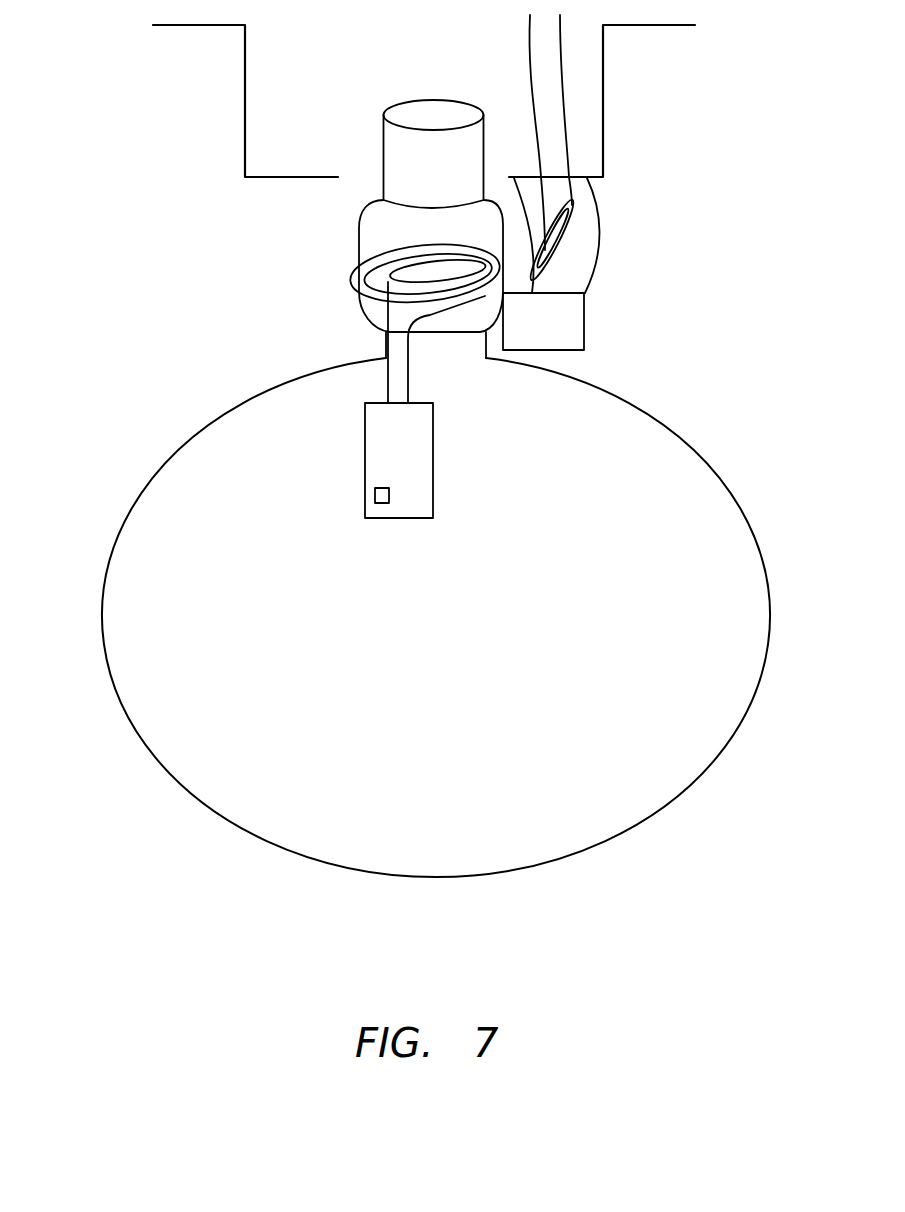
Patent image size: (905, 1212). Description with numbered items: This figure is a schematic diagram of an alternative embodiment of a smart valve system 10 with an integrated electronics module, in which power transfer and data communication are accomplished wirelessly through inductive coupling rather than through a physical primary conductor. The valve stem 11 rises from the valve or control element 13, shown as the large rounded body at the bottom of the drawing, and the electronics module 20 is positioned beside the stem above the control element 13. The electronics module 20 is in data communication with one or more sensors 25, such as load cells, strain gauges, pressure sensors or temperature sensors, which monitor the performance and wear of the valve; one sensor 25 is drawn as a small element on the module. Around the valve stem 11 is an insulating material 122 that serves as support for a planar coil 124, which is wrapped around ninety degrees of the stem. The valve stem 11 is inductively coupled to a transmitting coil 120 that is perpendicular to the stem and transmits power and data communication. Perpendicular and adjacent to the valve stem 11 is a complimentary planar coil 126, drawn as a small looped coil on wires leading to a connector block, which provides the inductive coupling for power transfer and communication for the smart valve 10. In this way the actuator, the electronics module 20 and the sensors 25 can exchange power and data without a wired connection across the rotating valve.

The smart valve system 10 is at (98, 126).
The valve stem 11 is at (405, 100).
The control element 13 is at (170, 773).
The electronics module 20 is at (364, 436).
The sensors 25 is at (373, 496).
The transmitting coil 120 is at (349, 283).
The insulating material 122 is at (362, 306).
The planar coil 124 is at (360, 260).
The complimentary planar coil 126 is at (572, 235).